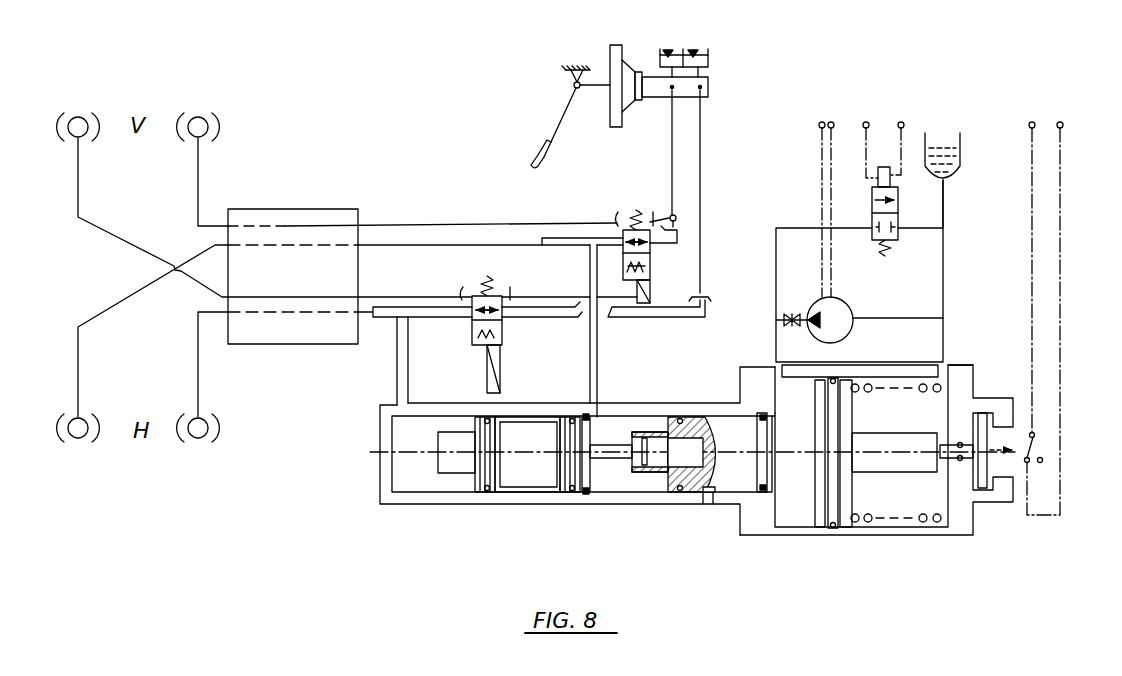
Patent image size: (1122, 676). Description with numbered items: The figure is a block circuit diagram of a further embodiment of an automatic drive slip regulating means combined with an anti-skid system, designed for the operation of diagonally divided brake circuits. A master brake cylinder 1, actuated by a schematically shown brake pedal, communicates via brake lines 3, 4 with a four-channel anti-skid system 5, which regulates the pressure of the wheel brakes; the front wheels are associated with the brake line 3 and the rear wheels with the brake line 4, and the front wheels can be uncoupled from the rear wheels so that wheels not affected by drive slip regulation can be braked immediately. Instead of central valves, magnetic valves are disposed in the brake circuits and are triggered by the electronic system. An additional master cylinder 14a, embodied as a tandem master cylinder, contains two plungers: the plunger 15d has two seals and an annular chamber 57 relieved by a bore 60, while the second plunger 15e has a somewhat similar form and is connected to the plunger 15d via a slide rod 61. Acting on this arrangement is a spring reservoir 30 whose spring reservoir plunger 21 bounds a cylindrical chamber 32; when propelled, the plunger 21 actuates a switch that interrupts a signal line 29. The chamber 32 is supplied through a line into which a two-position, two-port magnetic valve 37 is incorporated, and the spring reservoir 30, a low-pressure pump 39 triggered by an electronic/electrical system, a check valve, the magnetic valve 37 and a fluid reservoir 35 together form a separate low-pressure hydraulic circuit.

The master brake cylinder 1 is at (653, 101).
The brake line 3 is at (670, 167).
The brake line 4 is at (700, 181).
The four-channel anti-skid system 5 is at (312, 330).
The additional master cylinder 14a is at (408, 508).
The bore 60 is at (497, 503).
The annular chamber 57 is at (510, 495).
The plunger 15d is at (542, 476).
The slide rod 61 is at (623, 456).
The second plunger 15e is at (705, 486).
The spring reservoir plunger 21 is at (826, 512).
The spring reservoir 30 is at (908, 541).
The cylindrical chamber 32 is at (790, 410).
The fluid reservoir 35 is at (961, 160).
The 2/2-way magnetic valve 37 is at (899, 222).
The low-pressure pump 39 is at (845, 313).
The signal line 29 is at (1065, 268).